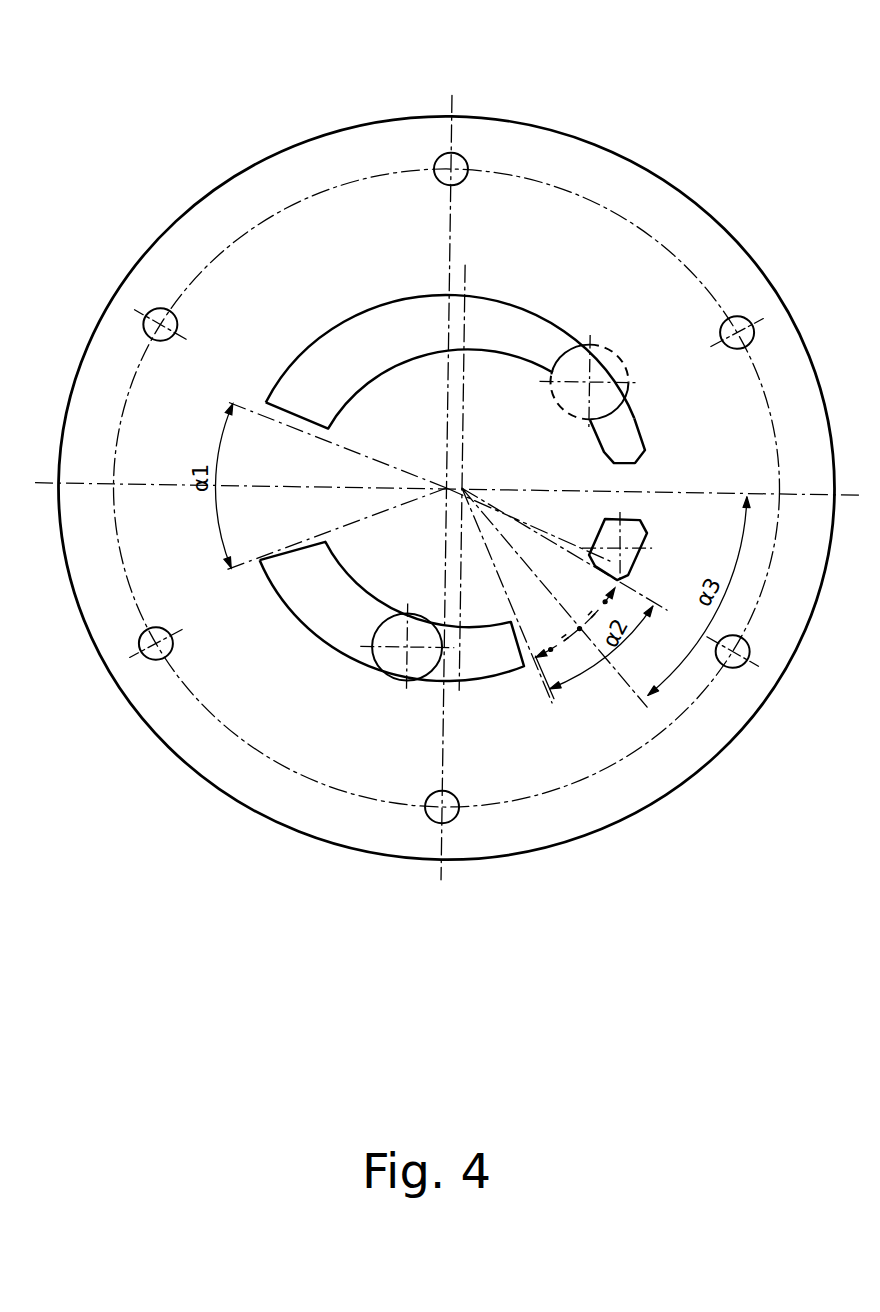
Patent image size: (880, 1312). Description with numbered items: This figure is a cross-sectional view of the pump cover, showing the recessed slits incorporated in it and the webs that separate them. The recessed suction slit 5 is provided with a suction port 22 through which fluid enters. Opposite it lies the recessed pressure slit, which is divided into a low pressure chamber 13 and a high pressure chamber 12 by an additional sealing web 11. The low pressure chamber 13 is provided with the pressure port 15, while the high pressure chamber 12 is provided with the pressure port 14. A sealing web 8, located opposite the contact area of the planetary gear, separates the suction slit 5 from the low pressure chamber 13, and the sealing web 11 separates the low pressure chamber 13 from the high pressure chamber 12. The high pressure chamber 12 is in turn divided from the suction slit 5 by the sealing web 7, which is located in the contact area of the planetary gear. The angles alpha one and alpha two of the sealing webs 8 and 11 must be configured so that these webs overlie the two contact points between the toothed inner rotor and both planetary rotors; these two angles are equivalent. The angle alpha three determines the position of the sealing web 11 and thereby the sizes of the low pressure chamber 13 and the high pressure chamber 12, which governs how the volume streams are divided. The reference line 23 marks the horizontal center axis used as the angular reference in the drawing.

The suction slit 5 is at (338, 358).
The sealing web 7 is at (630, 483).
The sealing web 8 is at (272, 455).
The additional sealing web 11 is at (563, 643).
The high pressure chamber 12 is at (642, 525).
The low pressure chamber 13 is at (330, 590).
The pressure port 14 is at (612, 558).
The pressure port 15 is at (421, 655).
The suction port 22 is at (575, 356).
The horizontal center axis 23 is at (695, 493).